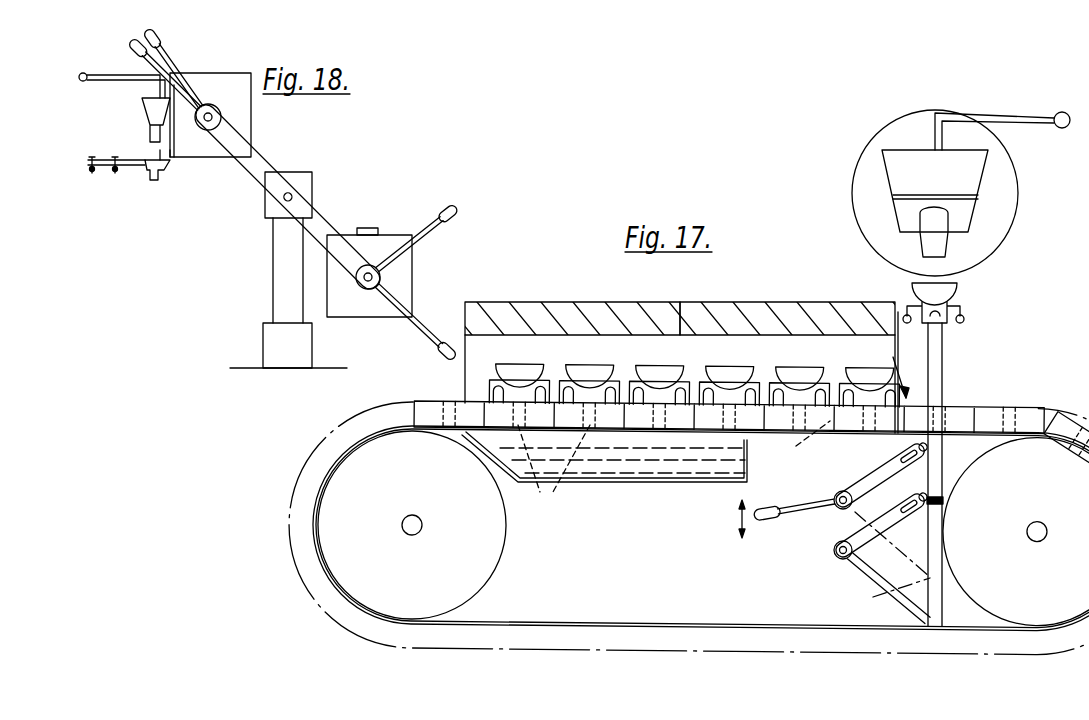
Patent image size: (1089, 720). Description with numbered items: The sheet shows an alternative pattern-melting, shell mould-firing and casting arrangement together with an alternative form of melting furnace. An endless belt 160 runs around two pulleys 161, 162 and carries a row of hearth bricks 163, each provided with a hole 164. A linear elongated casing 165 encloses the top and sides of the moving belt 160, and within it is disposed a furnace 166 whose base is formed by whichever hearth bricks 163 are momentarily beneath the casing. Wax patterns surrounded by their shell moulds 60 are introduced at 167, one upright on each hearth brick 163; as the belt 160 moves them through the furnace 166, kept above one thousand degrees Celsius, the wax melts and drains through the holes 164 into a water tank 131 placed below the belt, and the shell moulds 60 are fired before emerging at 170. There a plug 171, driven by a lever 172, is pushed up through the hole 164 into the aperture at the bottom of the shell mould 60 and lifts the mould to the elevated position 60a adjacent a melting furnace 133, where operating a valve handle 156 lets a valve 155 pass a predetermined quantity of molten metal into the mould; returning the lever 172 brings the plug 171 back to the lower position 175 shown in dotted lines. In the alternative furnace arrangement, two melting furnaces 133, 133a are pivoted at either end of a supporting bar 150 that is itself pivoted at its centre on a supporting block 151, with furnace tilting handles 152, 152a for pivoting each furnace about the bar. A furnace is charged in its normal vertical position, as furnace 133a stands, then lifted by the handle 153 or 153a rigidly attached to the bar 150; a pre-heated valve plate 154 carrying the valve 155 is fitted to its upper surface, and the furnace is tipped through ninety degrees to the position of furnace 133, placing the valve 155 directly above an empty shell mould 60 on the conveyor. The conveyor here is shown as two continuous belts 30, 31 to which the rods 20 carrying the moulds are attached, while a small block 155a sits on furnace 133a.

In FIG. 18, the rod 20 is at (135, 168).
In FIG. 18, the continuous belt 30 is at (92, 172).
In FIG. 18, the continuous belt 31 is at (116, 172).
In FIG. 18, the shell mould 60 is at (152, 160).
In FIG. 17, the shell mould 60 is at (524, 360).
In FIG. 17, the elevated shell mould position 60a is at (946, 291).
In FIG. 17, the water tank 131 is at (636, 486).
In FIG. 18, the melting furnace 133 is at (224, 83).
In FIG. 17, the melting furnace 133 is at (1008, 178).
In FIG. 18, the melting furnace 133a is at (408, 274).
In FIG. 18, the supporting bar 150 is at (262, 167).
In FIG. 18, the supporting block 151 is at (268, 196).
In FIG. 18, the furnace tilting handle 152 is at (160, 48).
In FIG. 18, the furnace tilting handle 152a is at (452, 216).
In FIG. 18, the handle 153 is at (134, 50).
In FIG. 18, the handle 153a is at (415, 327).
In FIG. 18, the valve plate 154 is at (170, 160).
In FIG. 18, the valve 155 is at (148, 112).
In FIG. 17, the valve 155 is at (937, 246).
In FIG. 18, the block 155a is at (368, 226).
In FIG. 18, the valve handle 156 is at (121, 92).
In FIG. 17, the valve handle 156 is at (1018, 119).
In FIG. 17, the endless belt 160 is at (332, 470).
In FIG. 17, the pulley 161 is at (411, 515).
In FIG. 17, the pulley 162 is at (1044, 528).
In FIG. 17, the hearth brick 163 is at (492, 416).
In FIG. 17, the hole 164 is at (674, 471).
In FIG. 17, the linear elongated casing 165 is at (605, 312).
In FIG. 17, the furnace 166 is at (713, 313).
In FIG. 17, the introduction point 167 is at (350, 415).
In FIG. 17, the furnace exit position 170 is at (884, 369).
In FIG. 17, the plug 171 is at (941, 368).
In FIG. 17, the lever 172 is at (775, 510).
In FIG. 17, the lower plug position 175 is at (886, 567).